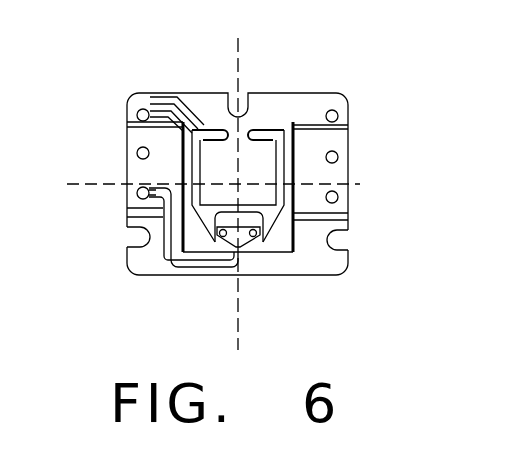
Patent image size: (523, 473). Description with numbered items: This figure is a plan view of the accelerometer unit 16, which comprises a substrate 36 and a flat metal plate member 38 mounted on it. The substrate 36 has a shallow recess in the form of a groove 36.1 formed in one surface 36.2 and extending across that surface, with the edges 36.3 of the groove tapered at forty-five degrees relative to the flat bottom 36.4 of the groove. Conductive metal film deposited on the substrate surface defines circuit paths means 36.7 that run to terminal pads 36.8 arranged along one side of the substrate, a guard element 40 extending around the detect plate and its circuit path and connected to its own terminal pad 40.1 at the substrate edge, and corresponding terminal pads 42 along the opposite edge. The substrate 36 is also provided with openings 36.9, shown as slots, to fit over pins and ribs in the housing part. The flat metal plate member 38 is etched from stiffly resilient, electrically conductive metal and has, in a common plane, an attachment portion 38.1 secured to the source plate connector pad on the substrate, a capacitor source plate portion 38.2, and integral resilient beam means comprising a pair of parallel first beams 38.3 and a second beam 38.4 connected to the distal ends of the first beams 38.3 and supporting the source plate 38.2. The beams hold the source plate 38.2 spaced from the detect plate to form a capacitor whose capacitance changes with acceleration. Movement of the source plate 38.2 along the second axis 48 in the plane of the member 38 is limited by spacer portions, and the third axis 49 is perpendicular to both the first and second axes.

The accelerometer unit 16 is at (150, 90).
The substrate 36 is at (309, 106).
The groove 36.1 is at (126, 135).
The surface of the substrate 36.2 is at (217, 107).
The edges of the groove 36.3 is at (348, 127).
The flat bottom of the groove 36.4 is at (346, 207).
The circuit paths means 36.7 is at (188, 268).
The terminal pads 36.8 is at (146, 114).
The openings 36.9 is at (257, 125).
The flat metal plate member 38 is at (298, 183).
The attachment portion 38.1 is at (241, 236).
The capacitor source plate portion 38.2 is at (262, 179).
The first beams 38.3 is at (187, 149).
The second beam 38.4 is at (248, 138).
The guard element 40 is at (167, 90).
The terminal pad 40.1 is at (137, 154).
The terminal pads 42 is at (338, 113).
The second axis 48 is at (85, 185).
The third axis 49 is at (238, 39).